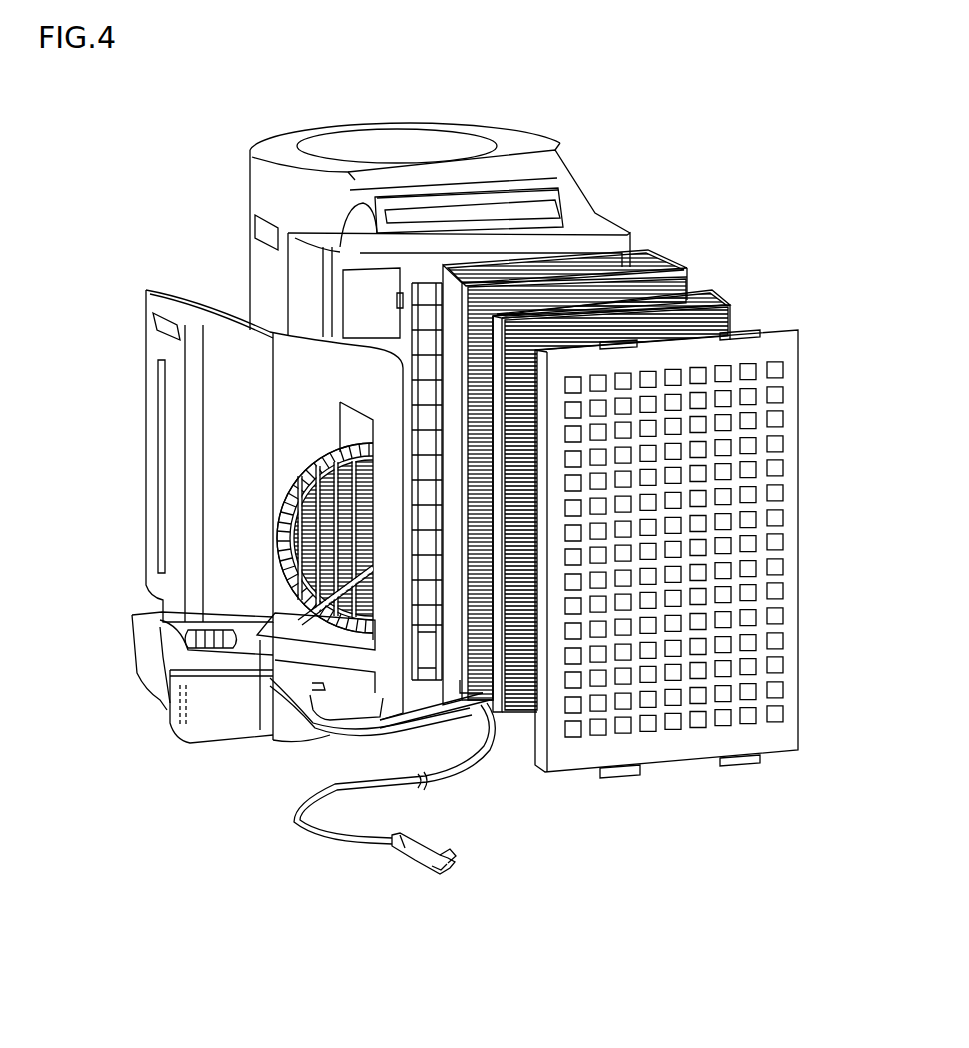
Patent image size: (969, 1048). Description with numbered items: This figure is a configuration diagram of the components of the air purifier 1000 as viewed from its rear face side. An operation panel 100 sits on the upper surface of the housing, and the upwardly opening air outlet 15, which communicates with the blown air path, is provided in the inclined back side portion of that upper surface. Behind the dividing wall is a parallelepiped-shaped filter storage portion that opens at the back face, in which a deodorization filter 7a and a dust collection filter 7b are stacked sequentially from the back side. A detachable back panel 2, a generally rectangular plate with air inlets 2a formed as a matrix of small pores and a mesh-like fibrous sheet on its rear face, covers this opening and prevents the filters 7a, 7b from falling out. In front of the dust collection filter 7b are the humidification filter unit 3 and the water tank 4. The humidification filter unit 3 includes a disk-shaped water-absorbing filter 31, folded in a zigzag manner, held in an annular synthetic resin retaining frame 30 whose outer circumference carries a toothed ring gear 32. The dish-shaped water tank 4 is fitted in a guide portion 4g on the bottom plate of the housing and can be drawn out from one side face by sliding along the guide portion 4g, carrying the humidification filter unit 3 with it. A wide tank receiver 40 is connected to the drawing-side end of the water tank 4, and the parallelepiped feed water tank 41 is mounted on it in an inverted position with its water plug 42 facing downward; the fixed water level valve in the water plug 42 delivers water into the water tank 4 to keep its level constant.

The air purifier 1000 is at (183, 828).
The operation panel 100 is at (593, 197).
The air outlet 15 is at (502, 189).
The back panel 2 is at (691, 573).
The air inlets 2a is at (785, 642).
The humidification filter unit 3 is at (267, 538).
The retaining frame 30 is at (297, 493).
The water-absorbing filter 31 is at (270, 567).
The ring gear 32 is at (320, 470).
The water tank 4 is at (297, 677).
The guide portion 4g is at (355, 663).
The tank receiver 40 is at (228, 723).
The feed water tank 41 is at (147, 400).
The water plug 42 is at (200, 634).
The deodorization filter 7a is at (698, 302).
The dust collection filter 7b is at (644, 270).